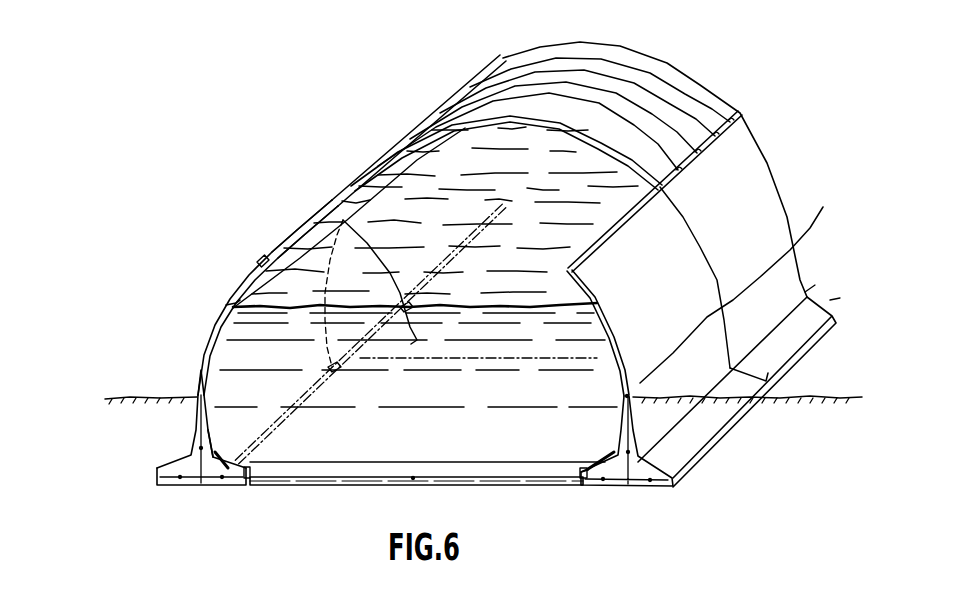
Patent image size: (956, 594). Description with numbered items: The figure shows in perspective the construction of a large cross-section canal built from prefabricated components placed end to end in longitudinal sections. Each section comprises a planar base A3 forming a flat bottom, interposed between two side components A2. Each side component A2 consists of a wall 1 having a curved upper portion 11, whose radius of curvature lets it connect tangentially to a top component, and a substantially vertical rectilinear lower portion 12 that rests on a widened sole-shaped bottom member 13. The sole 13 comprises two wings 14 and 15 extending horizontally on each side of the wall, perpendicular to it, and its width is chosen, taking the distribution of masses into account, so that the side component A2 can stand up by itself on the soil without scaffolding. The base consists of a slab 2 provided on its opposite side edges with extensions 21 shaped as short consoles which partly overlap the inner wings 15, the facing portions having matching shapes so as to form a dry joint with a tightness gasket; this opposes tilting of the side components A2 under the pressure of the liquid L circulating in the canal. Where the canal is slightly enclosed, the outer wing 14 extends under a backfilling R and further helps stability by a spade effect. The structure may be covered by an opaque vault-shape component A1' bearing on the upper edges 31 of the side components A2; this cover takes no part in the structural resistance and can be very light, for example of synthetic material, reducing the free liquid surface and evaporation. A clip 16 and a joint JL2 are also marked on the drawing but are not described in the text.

The vault-shape component A1' is at (579, 203).
The liquid L is at (340, 215).
The upper edges 31 is at (277, 243).
The connecting clip 16 is at (257, 258).
The curved upper portion 11 is at (227, 303).
The side component A2 is at (627, 315).
The backfilling R is at (117, 420).
The wall 1 is at (200, 374).
The outer wing 14 is at (172, 464).
The rectilinear lower portion 12 is at (222, 440).
The sole-shaped bottom member 13 is at (203, 485).
The inner wing 15 is at (238, 462).
The extensions 21 is at (237, 470).
The slab 2 is at (355, 470).
The planar base A3 is at (390, 468).
The joint clip at right slab end JL2 is at (580, 478).